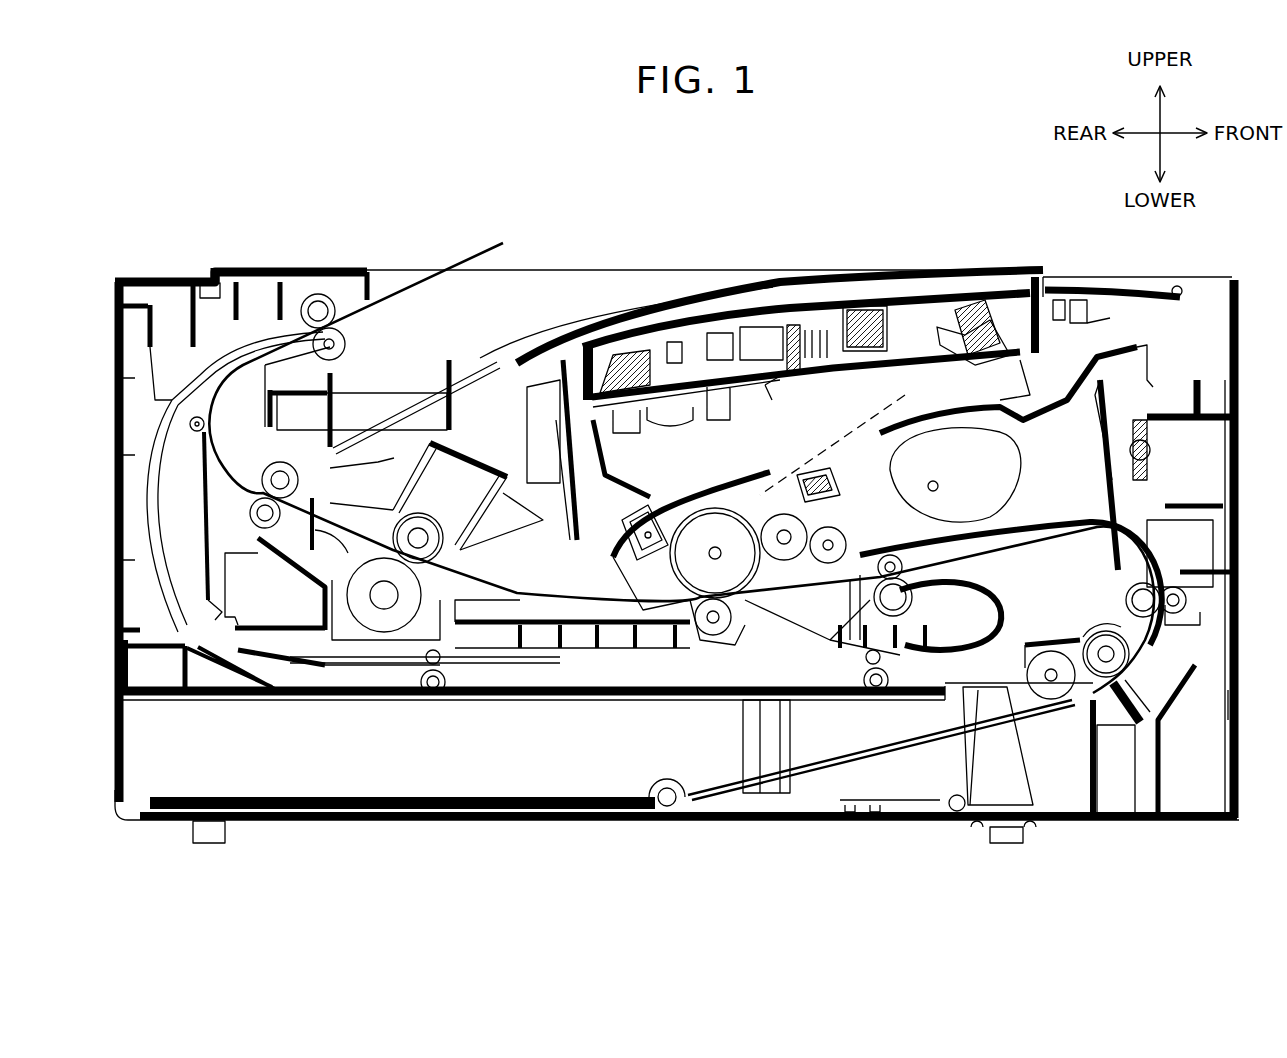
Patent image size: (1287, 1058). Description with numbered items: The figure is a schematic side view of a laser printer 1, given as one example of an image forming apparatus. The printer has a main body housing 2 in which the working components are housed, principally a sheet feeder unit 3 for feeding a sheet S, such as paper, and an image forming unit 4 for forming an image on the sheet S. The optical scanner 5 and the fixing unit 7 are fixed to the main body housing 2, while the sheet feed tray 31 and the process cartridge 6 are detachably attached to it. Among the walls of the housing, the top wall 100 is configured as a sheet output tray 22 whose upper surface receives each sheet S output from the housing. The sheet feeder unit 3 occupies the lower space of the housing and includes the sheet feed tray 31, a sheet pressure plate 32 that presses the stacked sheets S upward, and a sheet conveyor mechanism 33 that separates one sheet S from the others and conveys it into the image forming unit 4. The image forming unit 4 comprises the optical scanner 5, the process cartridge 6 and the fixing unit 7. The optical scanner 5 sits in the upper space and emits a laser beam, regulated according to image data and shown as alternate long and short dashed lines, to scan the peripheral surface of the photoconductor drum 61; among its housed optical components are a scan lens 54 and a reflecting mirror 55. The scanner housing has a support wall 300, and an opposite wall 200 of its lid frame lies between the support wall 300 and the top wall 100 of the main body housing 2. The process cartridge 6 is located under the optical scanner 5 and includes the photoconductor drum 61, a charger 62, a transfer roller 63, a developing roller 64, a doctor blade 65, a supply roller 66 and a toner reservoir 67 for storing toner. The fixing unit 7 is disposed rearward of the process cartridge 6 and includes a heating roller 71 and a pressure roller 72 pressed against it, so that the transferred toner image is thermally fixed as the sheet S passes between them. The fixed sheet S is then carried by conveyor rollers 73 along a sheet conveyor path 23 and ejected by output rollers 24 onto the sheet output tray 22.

The laser printer 1 is at (826, 172).
The main body housing 2 is at (897, 266).
The sheet feeder unit 3 is at (1247, 578).
The image forming unit 4 is at (1200, 320).
The optical scanner 5 is at (818, 298).
The process cartridge 6 is at (1126, 341).
The fixing unit 7 is at (492, 456).
The sheet output tray 22 is at (533, 345).
The sheet conveyor path 23 is at (213, 360).
The output rollers 24 is at (327, 328).
The sheet feed tray 31 is at (1240, 702).
The sheet pressure plate 32 is at (836, 762).
The sheet conveyor mechanism 33 is at (1085, 625).
The scan lens 54 is at (862, 305).
The reflecting mirror 55 is at (983, 310).
The photoconductor drum 61 is at (715, 506).
The charger 62 is at (661, 515).
The transfer roller 63 is at (711, 634).
The developing roller 64 is at (781, 534).
The doctor blade 65 is at (812, 523).
The supply roller 66 is at (850, 538).
The toner reservoir 67 is at (962, 478).
The heating roller 71 is at (442, 527).
The pressure roller 72 is at (355, 592).
The conveyor rollers 73 is at (257, 535).
The top wall 100 is at (619, 310).
The opposite wall 200 is at (694, 345).
The support wall 300 is at (778, 388).
The sheet S is at (470, 258).